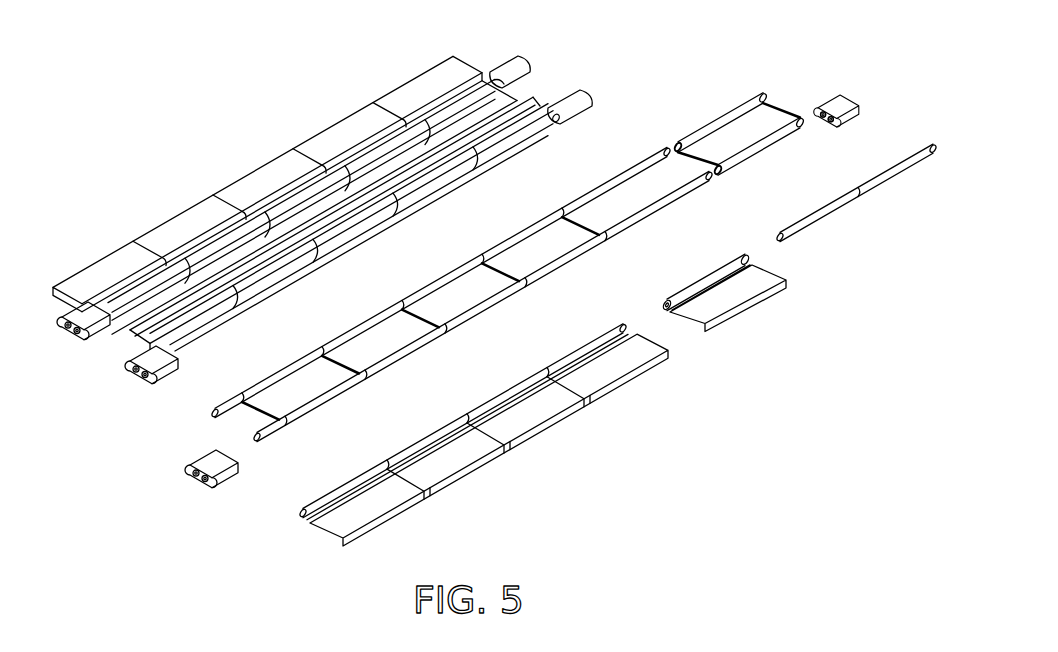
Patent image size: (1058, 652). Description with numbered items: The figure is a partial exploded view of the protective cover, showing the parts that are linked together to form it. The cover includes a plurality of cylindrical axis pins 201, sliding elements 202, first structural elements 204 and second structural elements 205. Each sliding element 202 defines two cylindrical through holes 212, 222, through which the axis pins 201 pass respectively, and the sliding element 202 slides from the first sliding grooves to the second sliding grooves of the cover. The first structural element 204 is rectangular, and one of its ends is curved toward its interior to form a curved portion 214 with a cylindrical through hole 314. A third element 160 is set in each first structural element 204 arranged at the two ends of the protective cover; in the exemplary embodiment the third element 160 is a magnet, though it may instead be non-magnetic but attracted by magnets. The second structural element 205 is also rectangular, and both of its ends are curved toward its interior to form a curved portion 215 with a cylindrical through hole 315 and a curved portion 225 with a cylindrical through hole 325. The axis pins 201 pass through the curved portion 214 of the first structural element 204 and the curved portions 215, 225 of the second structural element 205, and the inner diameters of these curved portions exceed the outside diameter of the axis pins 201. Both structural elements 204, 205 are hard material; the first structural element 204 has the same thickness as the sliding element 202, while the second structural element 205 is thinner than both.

The third element 160 is at (475, 462).
The axis pin 201 is at (893, 177).
The sliding element 202 is at (864, 115).
The first structural element 204 is at (455, 67).
The second structural element 205 is at (735, 129).
The cylindrical through hole 212 is at (830, 124).
The curved portion 214 is at (707, 280).
The curved portion 215 is at (757, 148).
The cylindrical through hole 222 is at (820, 112).
The curved portion 225 is at (718, 125).
The cylindrical through hole 314 is at (663, 305).
The cylindrical through hole 315 is at (718, 175).
The cylindrical through hole 325 is at (676, 147).